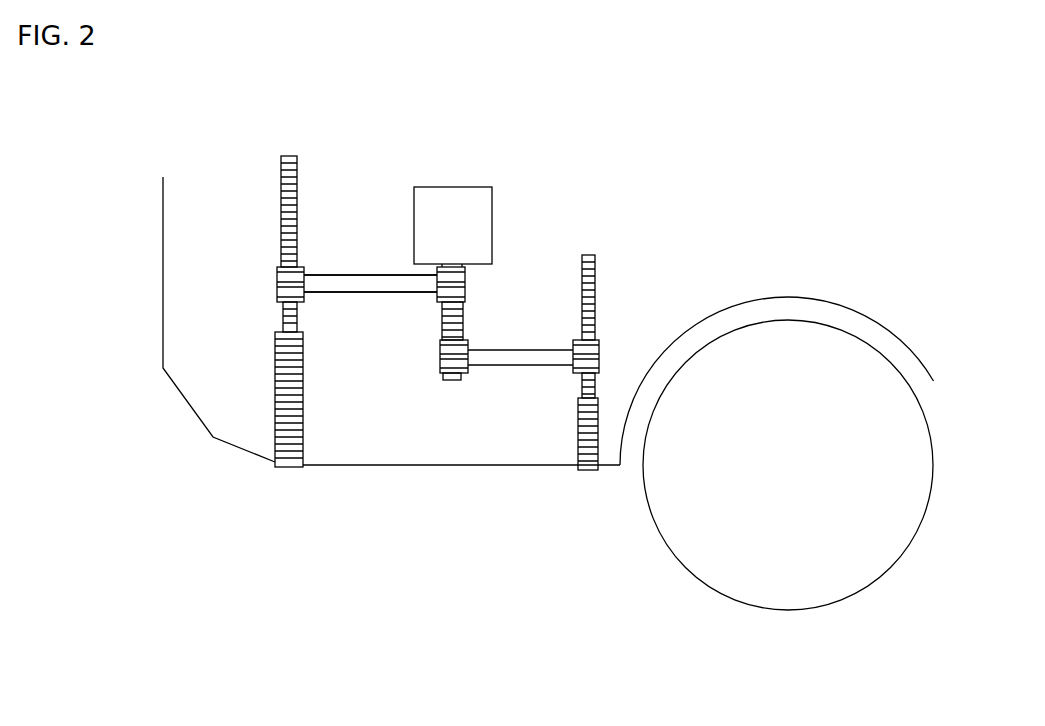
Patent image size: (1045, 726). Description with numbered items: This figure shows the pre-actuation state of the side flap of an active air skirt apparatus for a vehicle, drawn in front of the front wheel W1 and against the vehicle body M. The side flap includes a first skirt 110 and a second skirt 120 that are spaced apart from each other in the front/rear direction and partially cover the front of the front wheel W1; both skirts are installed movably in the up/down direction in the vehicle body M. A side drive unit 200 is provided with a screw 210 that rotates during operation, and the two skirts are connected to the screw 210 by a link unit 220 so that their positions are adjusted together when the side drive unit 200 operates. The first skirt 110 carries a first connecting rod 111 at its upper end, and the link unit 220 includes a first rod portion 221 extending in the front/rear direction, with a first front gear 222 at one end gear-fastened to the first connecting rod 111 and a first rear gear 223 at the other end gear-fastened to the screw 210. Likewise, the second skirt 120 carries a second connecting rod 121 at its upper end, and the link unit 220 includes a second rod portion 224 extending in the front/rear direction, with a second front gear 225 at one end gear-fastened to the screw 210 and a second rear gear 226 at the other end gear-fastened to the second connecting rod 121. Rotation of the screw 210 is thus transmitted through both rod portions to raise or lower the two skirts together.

The vehicle body M is at (150, 229).
The front wheel W1 is at (790, 593).
The first skirt 110 is at (290, 455).
The first connecting rod 111 is at (287, 183).
The second skirt 120 is at (590, 457).
The second connecting rod 121 is at (587, 257).
The side drive unit 200 is at (481, 195).
The screw 210 is at (460, 317).
The link unit 220 is at (365, 258).
The first rod portion 221 is at (336, 283).
The first front gear 222 is at (288, 280).
The first rear gear 223 is at (455, 272).
The second rod portion 224 is at (493, 360).
The second front gear 225 is at (457, 357).
The second rear gear 226 is at (593, 350).